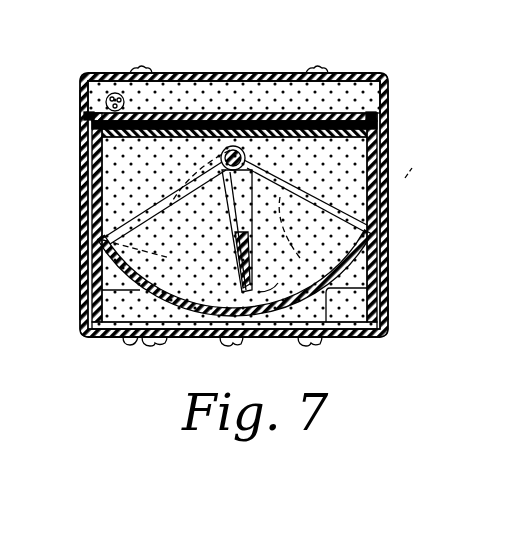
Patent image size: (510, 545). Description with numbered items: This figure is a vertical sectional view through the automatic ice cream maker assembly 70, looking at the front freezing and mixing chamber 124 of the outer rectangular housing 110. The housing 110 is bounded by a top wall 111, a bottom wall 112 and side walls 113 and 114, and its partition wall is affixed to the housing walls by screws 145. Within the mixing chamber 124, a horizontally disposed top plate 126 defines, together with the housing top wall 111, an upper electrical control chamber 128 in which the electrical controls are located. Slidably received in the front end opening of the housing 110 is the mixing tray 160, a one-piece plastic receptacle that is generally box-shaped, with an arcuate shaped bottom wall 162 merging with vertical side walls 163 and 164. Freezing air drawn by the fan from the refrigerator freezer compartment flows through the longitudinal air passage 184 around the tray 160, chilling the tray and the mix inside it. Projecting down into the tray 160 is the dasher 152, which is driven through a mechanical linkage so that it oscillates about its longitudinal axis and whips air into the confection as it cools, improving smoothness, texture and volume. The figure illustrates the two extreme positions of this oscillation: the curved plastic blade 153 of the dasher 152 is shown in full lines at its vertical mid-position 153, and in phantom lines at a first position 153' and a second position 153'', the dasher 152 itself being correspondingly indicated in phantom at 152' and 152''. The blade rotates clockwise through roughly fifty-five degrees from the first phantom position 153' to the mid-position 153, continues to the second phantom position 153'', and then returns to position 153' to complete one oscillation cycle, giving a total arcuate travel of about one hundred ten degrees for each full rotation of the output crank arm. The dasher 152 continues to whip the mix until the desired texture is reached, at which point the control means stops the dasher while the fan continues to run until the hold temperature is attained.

The automatic ice cream maker assembly 70 is at (100, 60).
The outer rectangular housing 110 is at (266, 74).
The top wall 111 is at (204, 75).
The bottom wall 112 is at (187, 334).
The side wall 113 is at (82, 216).
The side wall 114 is at (378, 172).
The front freezing and mixing chamber 124 is at (386, 228).
The top plate 126 is at (165, 119).
The upper electrical control chamber 128 is at (353, 93).
The screws 145 is at (143, 70).
The dasher 152 is at (206, 219).
The pointer arm alternate position 152' is at (291, 233).
The pointer arm alternate position 152'' is at (195, 196).
The curved plastic blade 153 is at (284, 282).
The first phantom line position of blade 153' is at (431, 162).
The second phantom line position of blade 153'' is at (140, 253).
The mixing tray 160 is at (327, 300).
The arcuate shaped bottom wall 162 is at (281, 318).
The side wall of tray 163 is at (103, 198).
The side wall of tray 164 is at (360, 173).
The longitudinal air passage 184 is at (353, 278).